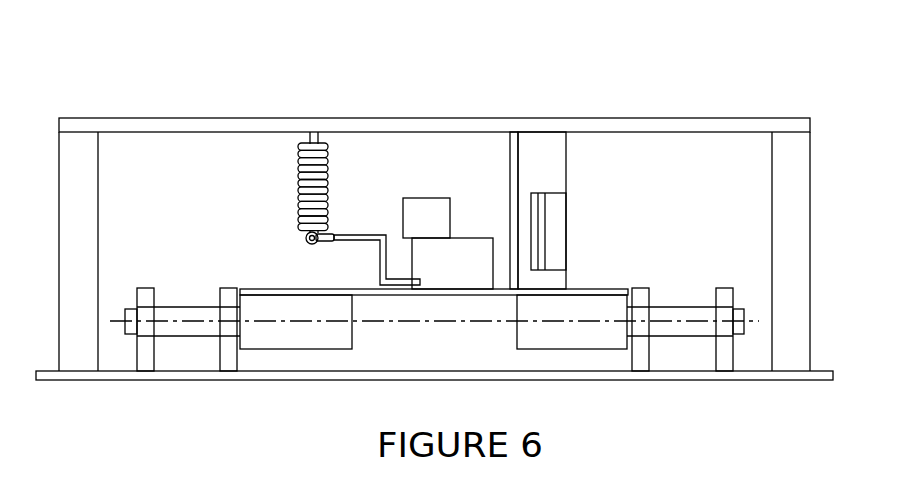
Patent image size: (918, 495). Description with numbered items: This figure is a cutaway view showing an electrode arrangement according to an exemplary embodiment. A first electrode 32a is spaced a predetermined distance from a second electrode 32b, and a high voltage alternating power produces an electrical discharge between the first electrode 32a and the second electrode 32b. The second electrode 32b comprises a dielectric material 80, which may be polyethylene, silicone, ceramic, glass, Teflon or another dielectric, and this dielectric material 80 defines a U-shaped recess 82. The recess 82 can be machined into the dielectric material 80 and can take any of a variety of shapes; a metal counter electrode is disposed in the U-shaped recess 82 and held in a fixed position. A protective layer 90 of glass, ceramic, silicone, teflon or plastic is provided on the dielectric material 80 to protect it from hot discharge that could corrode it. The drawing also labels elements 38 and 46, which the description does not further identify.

The protective layer 90 is at (732, 120).
The roller assembly 46 is at (693, 356).
The first electrode 32a is at (387, 222).
The second electrode 32b is at (592, 183).
The sensor 38 is at (440, 233).
The dielectric material 80 is at (513, 136).
The U-shaped recess 82 is at (556, 194).